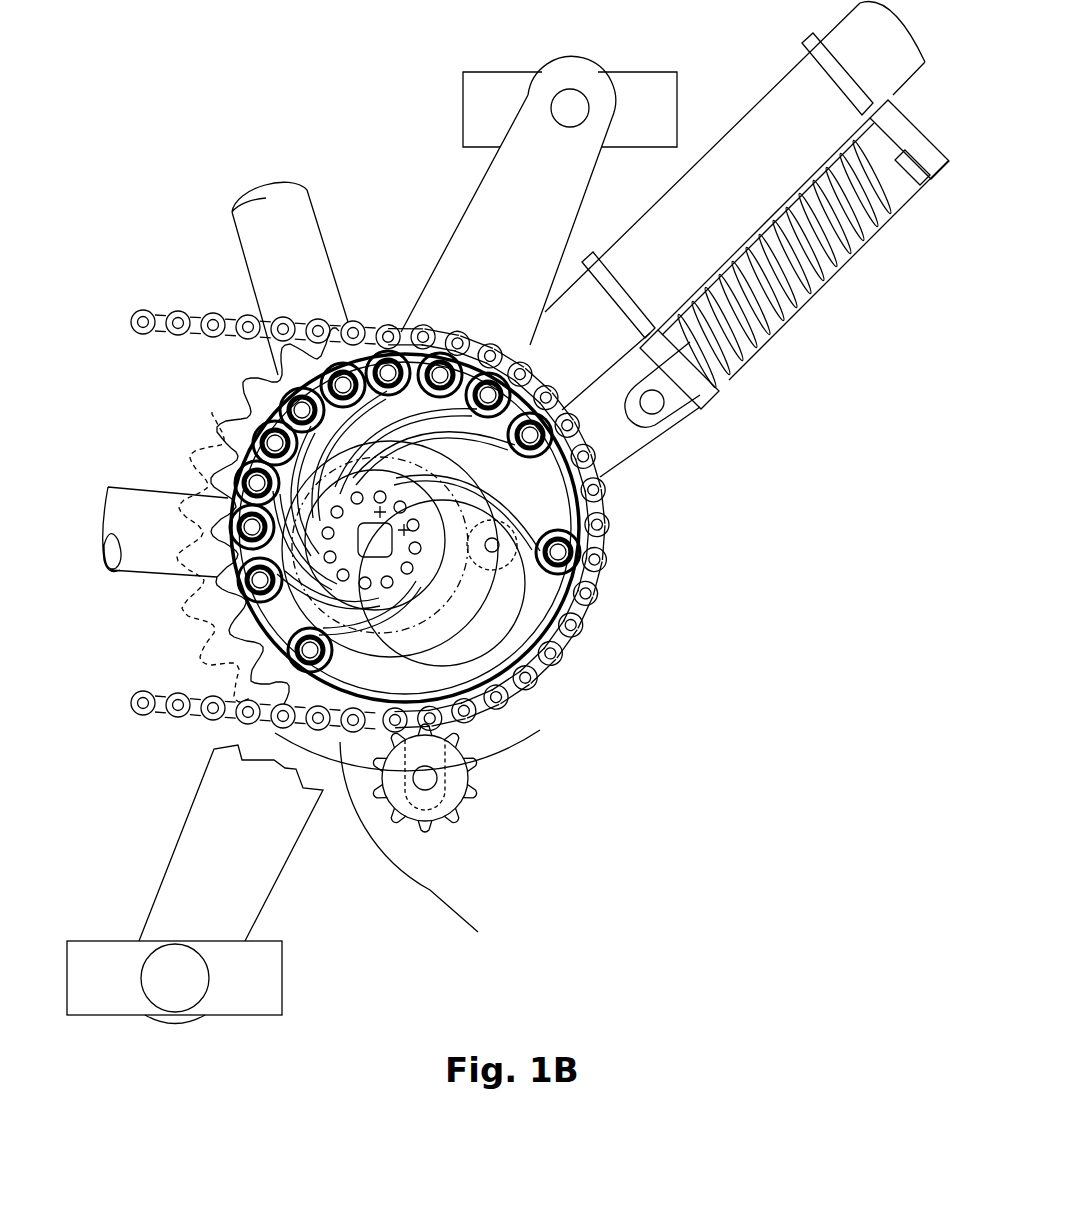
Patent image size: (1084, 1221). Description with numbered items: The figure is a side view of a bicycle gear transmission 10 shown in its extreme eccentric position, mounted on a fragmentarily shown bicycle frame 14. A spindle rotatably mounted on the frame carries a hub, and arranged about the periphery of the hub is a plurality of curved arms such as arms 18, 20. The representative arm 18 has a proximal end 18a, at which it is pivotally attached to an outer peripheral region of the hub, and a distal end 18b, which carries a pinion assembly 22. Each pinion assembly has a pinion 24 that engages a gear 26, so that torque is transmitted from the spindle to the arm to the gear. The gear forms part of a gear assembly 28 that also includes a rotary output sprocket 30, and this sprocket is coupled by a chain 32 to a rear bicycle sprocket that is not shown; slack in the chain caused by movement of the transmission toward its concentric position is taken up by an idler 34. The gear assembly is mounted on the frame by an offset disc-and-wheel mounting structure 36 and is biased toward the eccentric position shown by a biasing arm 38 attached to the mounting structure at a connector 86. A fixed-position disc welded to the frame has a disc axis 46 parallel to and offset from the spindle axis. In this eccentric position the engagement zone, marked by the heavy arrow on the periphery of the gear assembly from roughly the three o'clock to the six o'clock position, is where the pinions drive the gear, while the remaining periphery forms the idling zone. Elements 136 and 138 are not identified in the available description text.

The transmission 10 is at (422, 561).
The bicycle frame 14 is at (160, 483).
The curved arm 18 is at (578, 502).
The proximal end 18a is at (575, 640).
The distal end 18b is at (560, 545).
The curved arm 20 is at (505, 740).
The pinion assembly 22 is at (478, 790).
The pinion 24 is at (422, 846).
The gear 26 is at (520, 700).
The gear assembly 28 is at (550, 590).
The rotary output sprocket 30 is at (262, 438).
The chain 32 is at (200, 320).
The idler 34 is at (455, 815).
The offset disc-and-wheel mounting structure 36 is at (277, 373).
The biasing arm 38 is at (612, 462).
The disc axis 46 is at (258, 432).
The connector 86 is at (500, 549).
The shifted chainring position 136 is at (245, 410).
The outer arc 138 is at (600, 675).